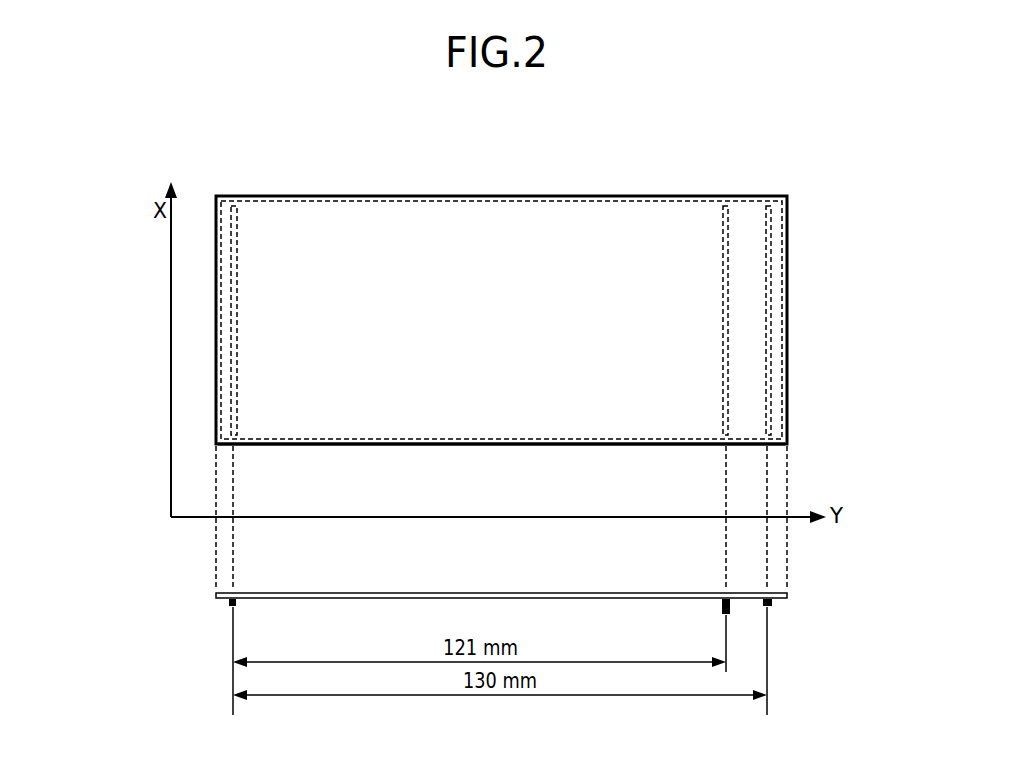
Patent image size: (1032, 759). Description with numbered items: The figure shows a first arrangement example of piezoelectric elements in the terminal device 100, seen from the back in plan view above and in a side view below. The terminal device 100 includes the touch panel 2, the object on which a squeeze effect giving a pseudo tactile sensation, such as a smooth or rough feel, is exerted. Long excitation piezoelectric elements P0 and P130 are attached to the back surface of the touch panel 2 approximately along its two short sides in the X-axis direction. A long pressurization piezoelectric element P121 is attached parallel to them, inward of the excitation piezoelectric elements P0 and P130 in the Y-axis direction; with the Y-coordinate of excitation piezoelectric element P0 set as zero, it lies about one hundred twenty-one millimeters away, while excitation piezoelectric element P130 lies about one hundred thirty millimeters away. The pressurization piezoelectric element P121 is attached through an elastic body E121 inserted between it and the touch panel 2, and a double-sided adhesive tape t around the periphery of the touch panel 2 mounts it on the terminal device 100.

The terminal device 100 is at (791, 180).
The touch panel 2 is at (510, 217).
The double-sided adhesive tape t is at (665, 447).
The excitation piezoelectric element P0 is at (233, 242).
The pressurization piezoelectric element P121 is at (717, 222).
The elastic body E121 is at (721, 603).
The excitation piezoelectric element P130 is at (772, 240).